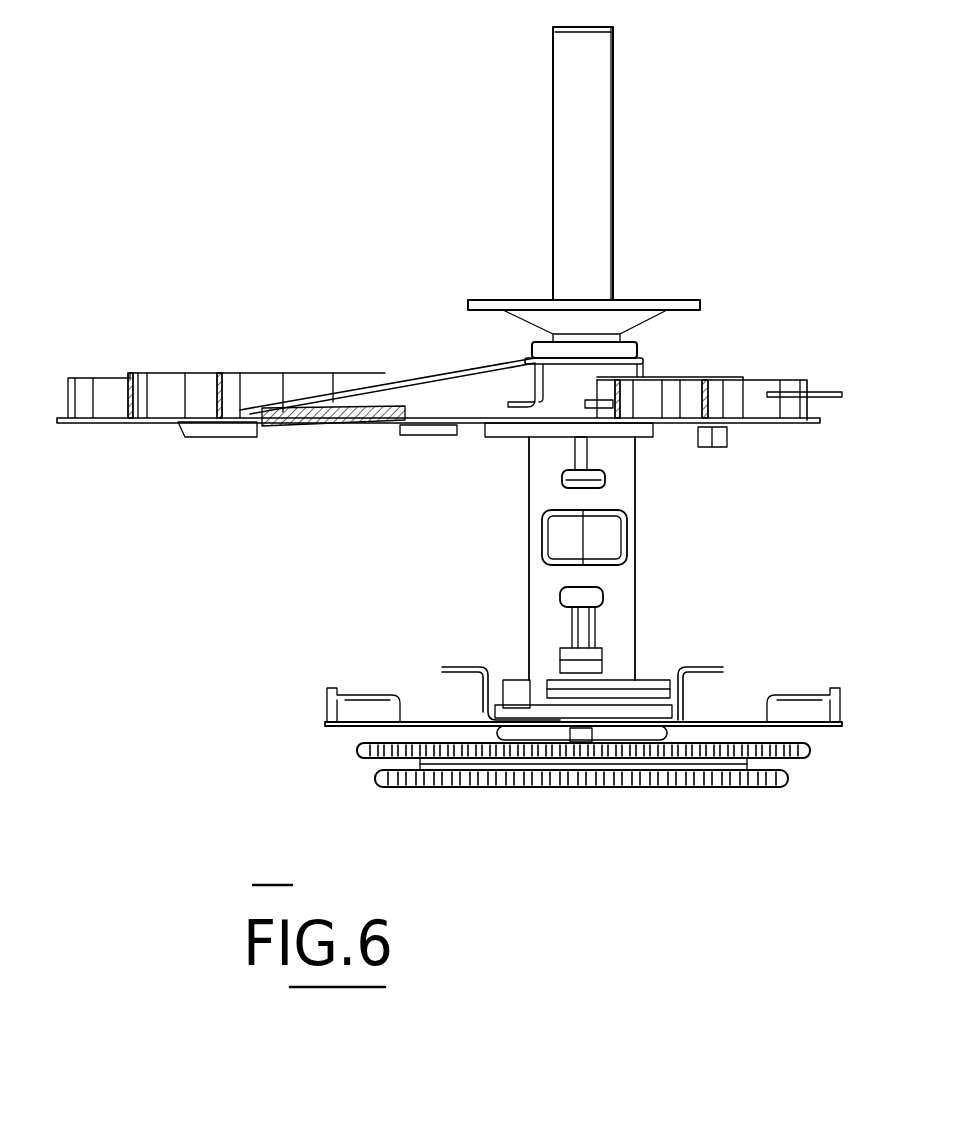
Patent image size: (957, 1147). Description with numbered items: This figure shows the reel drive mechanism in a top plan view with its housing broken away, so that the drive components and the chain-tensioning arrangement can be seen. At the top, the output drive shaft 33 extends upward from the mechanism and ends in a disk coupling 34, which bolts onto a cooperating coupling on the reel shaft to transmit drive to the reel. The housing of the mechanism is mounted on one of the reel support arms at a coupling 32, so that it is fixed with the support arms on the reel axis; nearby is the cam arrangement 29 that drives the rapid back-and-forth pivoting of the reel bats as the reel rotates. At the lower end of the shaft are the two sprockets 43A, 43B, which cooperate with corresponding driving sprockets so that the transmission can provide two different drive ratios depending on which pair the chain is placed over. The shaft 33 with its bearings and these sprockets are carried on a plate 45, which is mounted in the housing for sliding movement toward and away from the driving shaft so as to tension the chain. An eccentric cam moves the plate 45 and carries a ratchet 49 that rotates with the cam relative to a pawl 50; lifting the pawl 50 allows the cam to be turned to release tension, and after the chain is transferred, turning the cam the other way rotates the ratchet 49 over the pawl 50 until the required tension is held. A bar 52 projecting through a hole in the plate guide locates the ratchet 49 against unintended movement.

The cam arrangement 29 is at (258, 340).
The coupling 32 is at (660, 577).
The output drive shaft 33 is at (598, 147).
The disk coupling 34 is at (636, 300).
The sprocket 43A is at (762, 790).
The sprocket 43B is at (684, 768).
The plate 45 is at (738, 722).
The ratchet 49 is at (572, 712).
The pawl 50 is at (499, 655).
The bar 52 is at (702, 680).